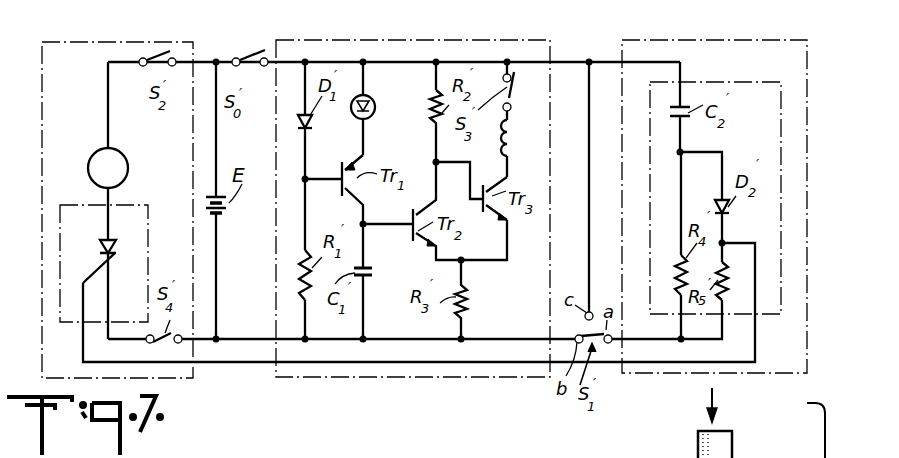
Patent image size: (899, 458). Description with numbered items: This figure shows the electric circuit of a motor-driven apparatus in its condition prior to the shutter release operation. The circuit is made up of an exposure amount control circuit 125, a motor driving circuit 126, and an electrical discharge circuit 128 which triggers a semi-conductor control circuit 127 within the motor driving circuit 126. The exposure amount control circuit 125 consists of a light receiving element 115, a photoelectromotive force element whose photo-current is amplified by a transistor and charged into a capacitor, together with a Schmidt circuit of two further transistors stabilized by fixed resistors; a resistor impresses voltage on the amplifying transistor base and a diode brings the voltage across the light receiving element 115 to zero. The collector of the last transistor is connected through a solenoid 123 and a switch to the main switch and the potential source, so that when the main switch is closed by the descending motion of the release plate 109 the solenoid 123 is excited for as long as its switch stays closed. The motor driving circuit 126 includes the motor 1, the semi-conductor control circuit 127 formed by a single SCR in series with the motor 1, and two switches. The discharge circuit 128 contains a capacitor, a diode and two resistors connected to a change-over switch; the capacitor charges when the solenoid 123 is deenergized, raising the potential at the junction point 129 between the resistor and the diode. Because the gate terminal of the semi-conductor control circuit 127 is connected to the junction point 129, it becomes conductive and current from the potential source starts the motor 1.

The motor 1 is at (116, 166).
The release plate 109 is at (697, 442).
The light receiving element 115 is at (378, 102).
The solenoid 123 is at (502, 147).
The exposure amount control circuit 125 is at (418, 24).
The motor driving circuit 126 is at (97, 40).
The semi-conductor control circuit 127 is at (152, 222).
The electrical discharge circuit 128 is at (680, 40).
The junction point 129 is at (725, 242).